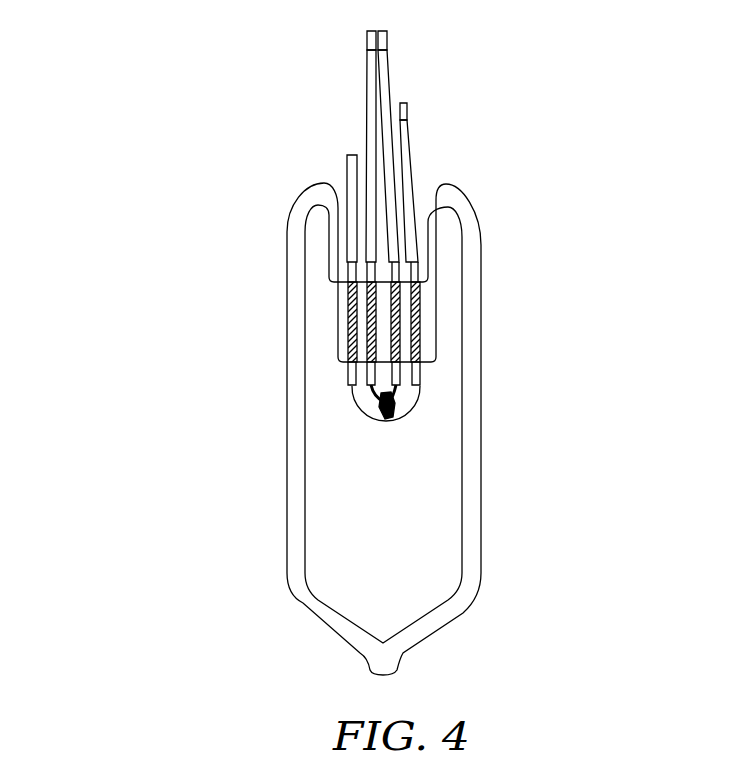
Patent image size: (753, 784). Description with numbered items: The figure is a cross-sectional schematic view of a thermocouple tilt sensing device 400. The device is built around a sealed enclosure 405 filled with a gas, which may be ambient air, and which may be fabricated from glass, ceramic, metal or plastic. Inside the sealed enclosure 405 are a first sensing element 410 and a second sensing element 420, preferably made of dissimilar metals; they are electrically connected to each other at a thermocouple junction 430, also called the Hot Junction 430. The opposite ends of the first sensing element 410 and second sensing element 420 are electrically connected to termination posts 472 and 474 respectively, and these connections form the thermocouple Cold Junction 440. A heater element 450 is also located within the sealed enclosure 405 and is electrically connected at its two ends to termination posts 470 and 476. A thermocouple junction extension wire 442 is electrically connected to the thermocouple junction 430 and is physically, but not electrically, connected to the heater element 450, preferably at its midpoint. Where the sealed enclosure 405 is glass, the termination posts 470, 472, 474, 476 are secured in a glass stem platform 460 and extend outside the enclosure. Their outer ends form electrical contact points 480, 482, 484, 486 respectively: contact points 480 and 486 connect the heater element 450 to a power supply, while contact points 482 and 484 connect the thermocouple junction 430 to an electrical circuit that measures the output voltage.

The thermocouple tilt sensing device 400 is at (516, 337).
The sealed enclosure 405 is at (481, 372).
The first sensing element 410 is at (370, 393).
The second sensing element 420 is at (421, 391).
The thermocouple junction 430 is at (382, 415).
The thermocouple Cold Junction 440 is at (374, 371).
The thermocouple junction extension wire 442 is at (382, 437).
The heater element 450 is at (407, 432).
The glass stem platform 460 is at (340, 348).
The termination post 470 is at (348, 313).
The termination post 472 is at (347, 293).
The termination post 474 is at (417, 298).
The termination post 476 is at (420, 335).
The electrical contact point 480 is at (347, 157).
The electrical contact point 482 is at (367, 70).
The electrical contact point 484 is at (381, 65).
The electrical contact point 486 is at (408, 128).